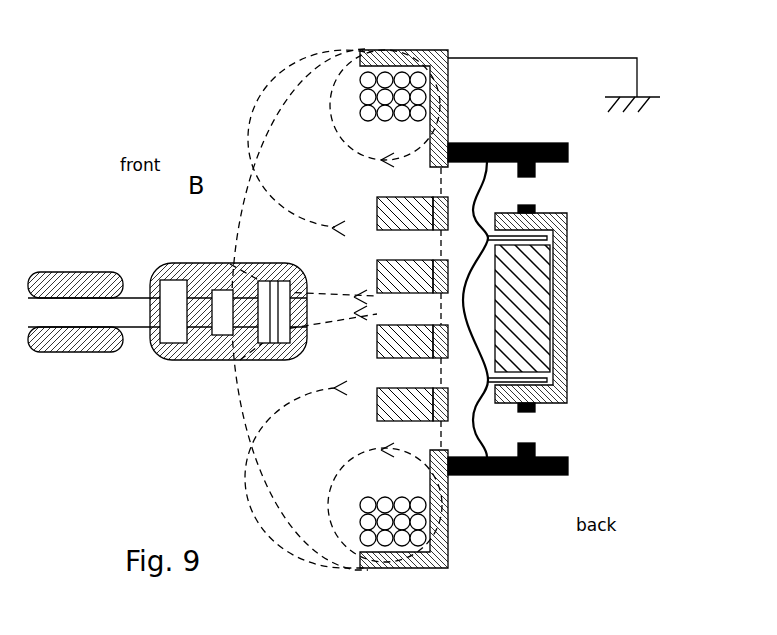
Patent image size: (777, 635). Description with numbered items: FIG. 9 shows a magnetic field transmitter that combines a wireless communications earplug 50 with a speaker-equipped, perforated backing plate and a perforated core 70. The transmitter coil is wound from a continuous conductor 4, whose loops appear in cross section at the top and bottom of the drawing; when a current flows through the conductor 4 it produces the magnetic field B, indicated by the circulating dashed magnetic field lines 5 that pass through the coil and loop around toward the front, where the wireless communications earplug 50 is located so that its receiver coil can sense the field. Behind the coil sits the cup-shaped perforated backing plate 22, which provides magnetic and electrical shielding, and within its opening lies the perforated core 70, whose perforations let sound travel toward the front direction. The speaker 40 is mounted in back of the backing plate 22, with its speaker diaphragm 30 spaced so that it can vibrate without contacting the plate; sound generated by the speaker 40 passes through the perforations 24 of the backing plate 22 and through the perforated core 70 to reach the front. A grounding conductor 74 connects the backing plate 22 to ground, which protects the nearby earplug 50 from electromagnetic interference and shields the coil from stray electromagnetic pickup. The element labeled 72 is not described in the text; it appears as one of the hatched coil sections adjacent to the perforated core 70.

The conductor 4 is at (358, 70).
The magnetic field lines 5 is at (223, 148).
The perforated backing plate 22 is at (450, 557).
The perforations 24 is at (440, 173).
The speaker diaphragm 30 is at (482, 434).
The speaker 40 is at (494, 132).
The wireless communications earplug 50 is at (166, 386).
The perforated core 70 is at (382, 403).
The coil 72 is at (398, 242).
The grounding conductor 74 is at (640, 64).